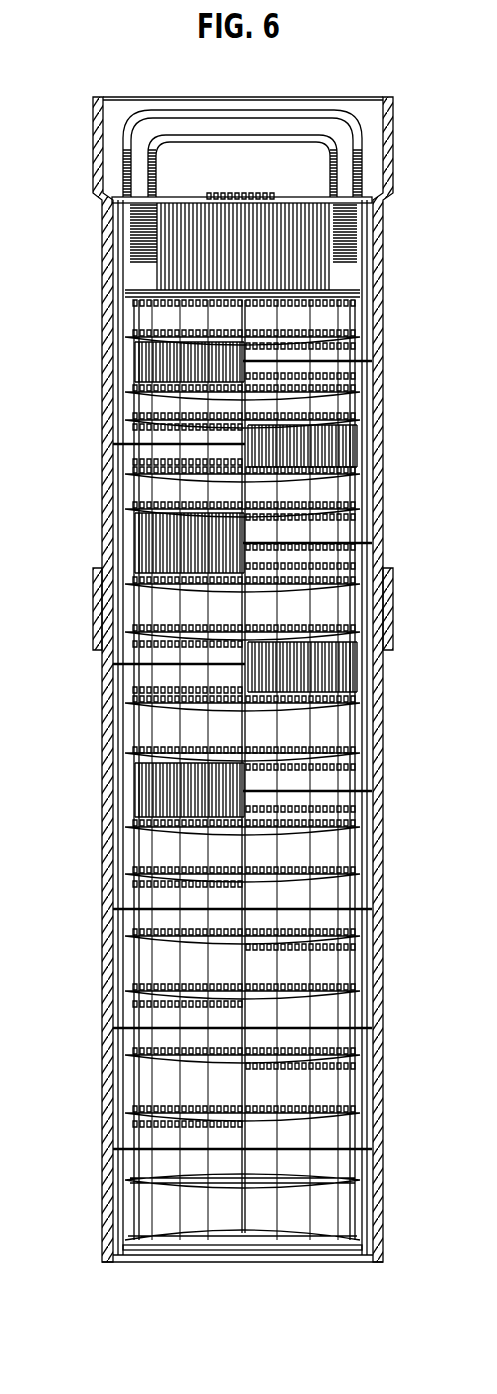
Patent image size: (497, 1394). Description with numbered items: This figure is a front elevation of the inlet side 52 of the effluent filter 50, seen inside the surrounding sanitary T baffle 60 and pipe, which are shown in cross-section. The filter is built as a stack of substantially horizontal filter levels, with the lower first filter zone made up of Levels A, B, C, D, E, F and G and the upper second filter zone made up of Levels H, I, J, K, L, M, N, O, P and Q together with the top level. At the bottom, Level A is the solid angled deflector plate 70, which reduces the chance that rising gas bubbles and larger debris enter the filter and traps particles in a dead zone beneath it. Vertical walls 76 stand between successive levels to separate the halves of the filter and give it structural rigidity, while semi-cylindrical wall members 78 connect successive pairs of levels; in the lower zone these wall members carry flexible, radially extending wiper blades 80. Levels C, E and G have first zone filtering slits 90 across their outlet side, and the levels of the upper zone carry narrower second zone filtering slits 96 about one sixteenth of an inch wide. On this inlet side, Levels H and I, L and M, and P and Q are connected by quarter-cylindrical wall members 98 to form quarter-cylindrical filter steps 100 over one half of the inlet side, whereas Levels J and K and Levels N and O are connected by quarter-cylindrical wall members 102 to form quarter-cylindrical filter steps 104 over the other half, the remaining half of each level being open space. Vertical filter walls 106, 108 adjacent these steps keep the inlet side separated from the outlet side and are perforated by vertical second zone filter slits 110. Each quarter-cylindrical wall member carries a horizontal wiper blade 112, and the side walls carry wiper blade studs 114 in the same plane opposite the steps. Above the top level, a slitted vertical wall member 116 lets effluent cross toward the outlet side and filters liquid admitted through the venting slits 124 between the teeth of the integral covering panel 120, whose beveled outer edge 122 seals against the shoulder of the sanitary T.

The effluent filter 50 is at (232, 102).
The inlet side 52 is at (247, 181).
The sanitary T baffle 60 is at (165, 380).
The angled deflector plate 70 is at (280, 1240).
The vertical wall 76 is at (240, 1222).
The semi-cylindrical wall member 78 is at (325, 902).
The wiper blade 80 is at (150, 896).
The first zone filtering slits 90 is at (165, 1070).
The second zone filtering slits 96 is at (185, 590).
The quarter-cylindrical wall member 98 is at (340, 555).
The quarter-cylindrical filter steps 100 is at (300, 378).
The quarter-cylindrical wall member 102 is at (155, 688).
The quarter-cylindrical filter steps 104 is at (180, 470).
The vertical filter wall 106 is at (175, 362).
The vertical filter wall 108 is at (345, 437).
The vertical second zone filter slits 110 is at (190, 543).
The wiper blade 112 is at (175, 440).
The wiper blade studs 114 is at (360, 467).
The vertical wall member 116 is at (150, 255).
The integral covering panel 120 is at (180, 200).
The beveled outer edge 122 is at (150, 209).
The venting slits 124 is at (272, 195).
The Level A is at (330, 1240).
The Level B is at (333, 1182).
The Level C is at (178, 1105).
The Level D is at (340, 1065).
The Level E is at (185, 988).
The Level F is at (333, 943).
The Level G is at (180, 870).
The Level H is at (315, 822).
The Level I is at (318, 750).
The Level J is at (185, 703).
The Level K is at (175, 578).
The Level L is at (320, 582).
The Level M is at (335, 530).
The Level N is at (175, 502).
The Level O is at (170, 417).
The Level P is at (313, 403).
The Level Q is at (320, 334).